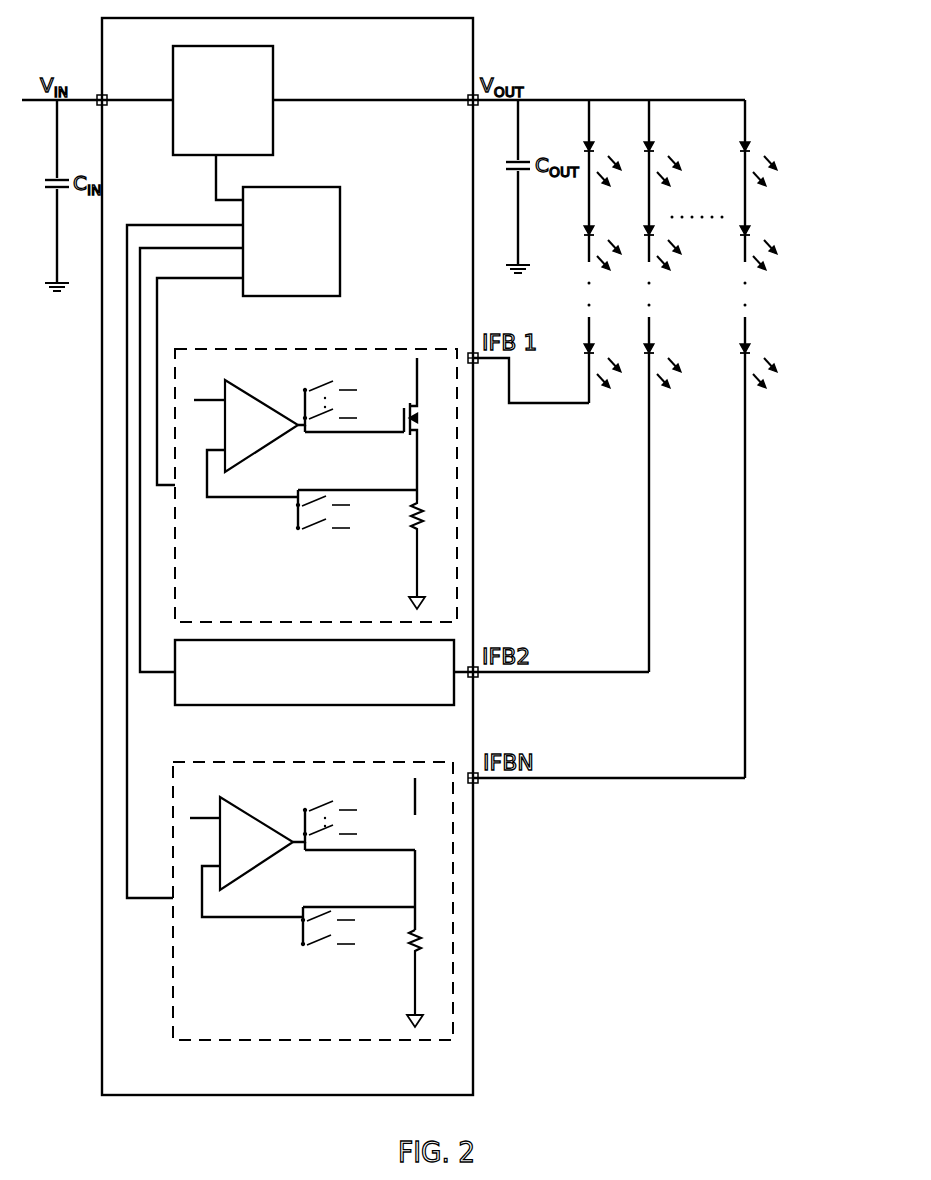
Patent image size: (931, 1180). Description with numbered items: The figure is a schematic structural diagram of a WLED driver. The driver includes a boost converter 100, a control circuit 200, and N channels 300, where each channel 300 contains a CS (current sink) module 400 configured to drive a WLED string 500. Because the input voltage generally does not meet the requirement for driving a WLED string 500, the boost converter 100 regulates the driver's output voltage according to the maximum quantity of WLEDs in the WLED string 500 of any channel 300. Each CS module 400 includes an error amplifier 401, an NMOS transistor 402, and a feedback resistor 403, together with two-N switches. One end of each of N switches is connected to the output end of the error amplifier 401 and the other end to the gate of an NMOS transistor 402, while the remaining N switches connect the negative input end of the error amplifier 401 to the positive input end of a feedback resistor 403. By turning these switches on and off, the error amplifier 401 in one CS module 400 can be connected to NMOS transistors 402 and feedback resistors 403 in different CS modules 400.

The boost converter 100 is at (271, 92).
The control circuit 200 is at (326, 211).
The channel 300 is at (655, 439).
The CS module 400 is at (393, 658).
The error amplifier 401 is at (258, 598).
The NMOS transistor 402 is at (463, 643).
The feedback resistor 403 is at (506, 763).
The WLED string 500 is at (612, 300).